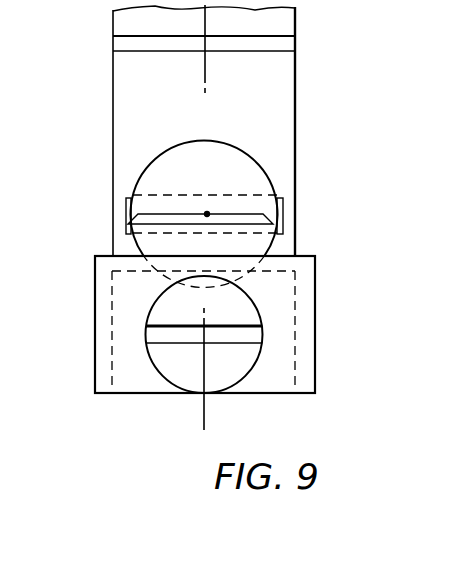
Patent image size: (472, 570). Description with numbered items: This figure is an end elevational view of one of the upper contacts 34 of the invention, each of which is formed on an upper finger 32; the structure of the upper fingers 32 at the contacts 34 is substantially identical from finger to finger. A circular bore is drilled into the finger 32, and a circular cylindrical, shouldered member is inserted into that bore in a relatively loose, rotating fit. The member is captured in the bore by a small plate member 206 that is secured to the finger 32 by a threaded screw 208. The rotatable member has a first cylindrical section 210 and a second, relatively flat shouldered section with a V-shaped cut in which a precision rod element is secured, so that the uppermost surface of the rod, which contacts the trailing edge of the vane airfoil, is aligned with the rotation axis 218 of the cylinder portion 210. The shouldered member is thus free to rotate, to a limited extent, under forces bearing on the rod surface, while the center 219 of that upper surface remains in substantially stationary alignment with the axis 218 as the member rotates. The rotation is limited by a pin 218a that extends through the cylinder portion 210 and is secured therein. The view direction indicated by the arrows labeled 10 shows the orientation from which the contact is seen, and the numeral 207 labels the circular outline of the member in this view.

The section line / viewing direction 10 is at (220, 21).
The upper finger 32 is at (291, 93).
The contact 34 is at (173, 211).
The plate member 206 is at (287, 362).
The upper circular member 207 is at (258, 168).
The threaded screw 208 is at (233, 377).
The first cylindrical section 210 is at (198, 162).
The rotation axis 218 is at (207, 213).
The pin 218a is at (284, 199).
The center of upper surface 219 is at (208, 212).